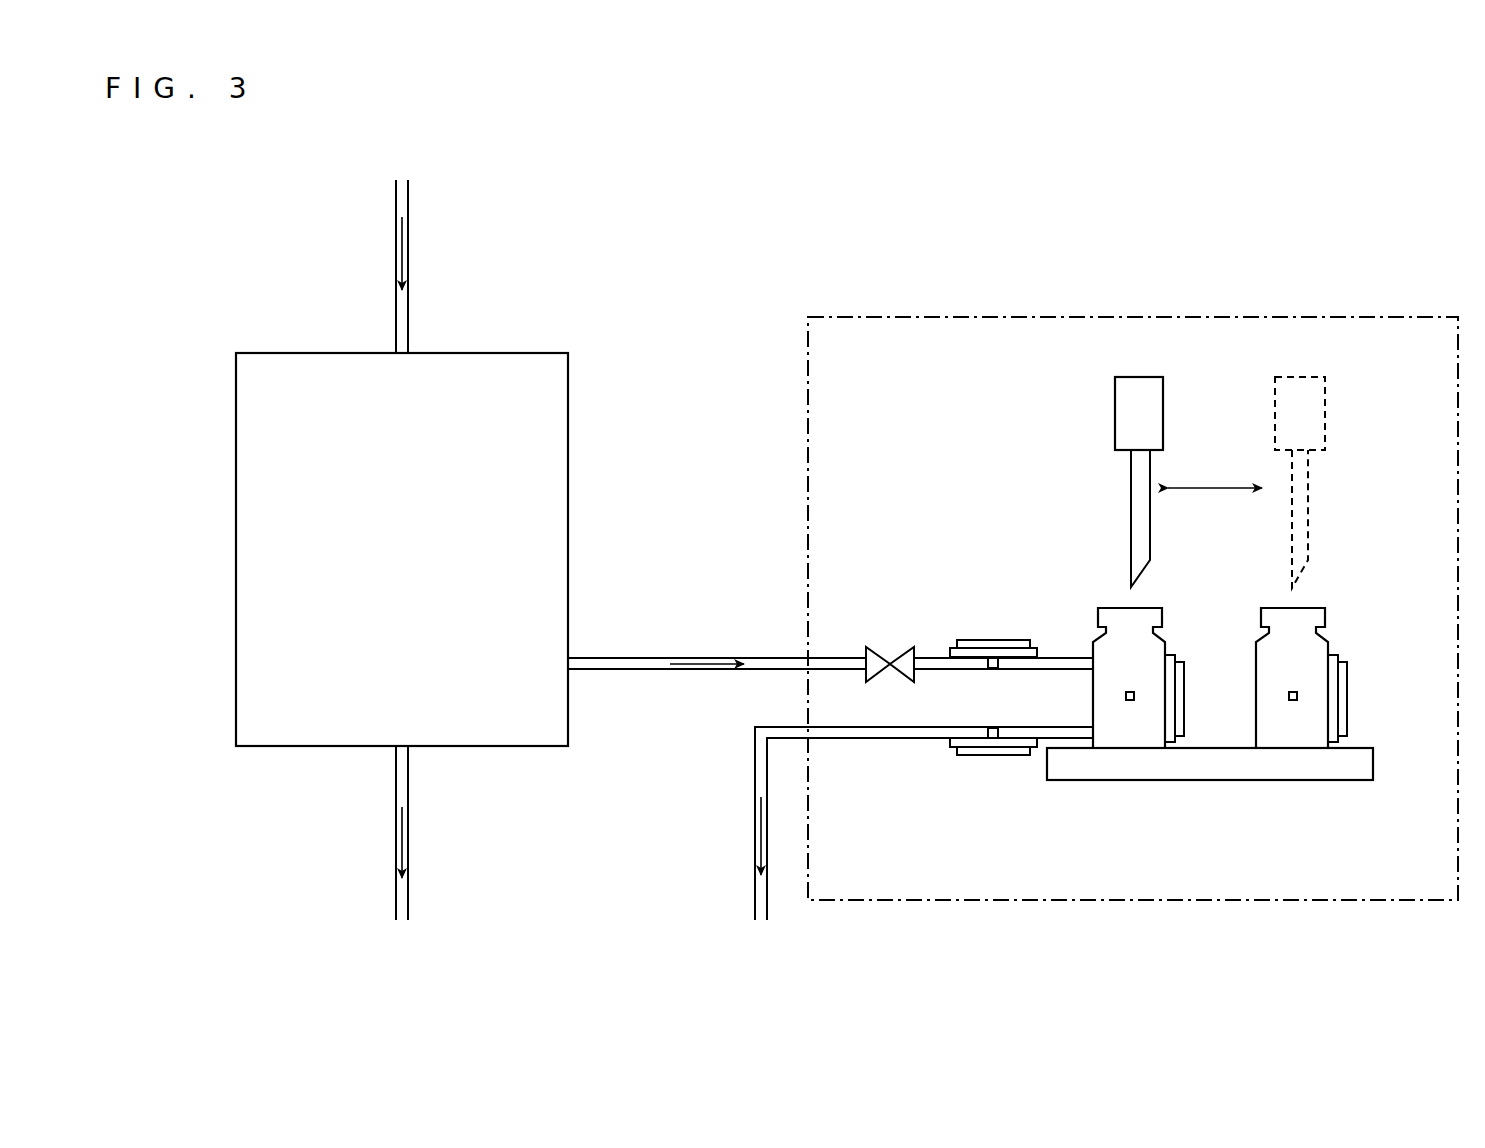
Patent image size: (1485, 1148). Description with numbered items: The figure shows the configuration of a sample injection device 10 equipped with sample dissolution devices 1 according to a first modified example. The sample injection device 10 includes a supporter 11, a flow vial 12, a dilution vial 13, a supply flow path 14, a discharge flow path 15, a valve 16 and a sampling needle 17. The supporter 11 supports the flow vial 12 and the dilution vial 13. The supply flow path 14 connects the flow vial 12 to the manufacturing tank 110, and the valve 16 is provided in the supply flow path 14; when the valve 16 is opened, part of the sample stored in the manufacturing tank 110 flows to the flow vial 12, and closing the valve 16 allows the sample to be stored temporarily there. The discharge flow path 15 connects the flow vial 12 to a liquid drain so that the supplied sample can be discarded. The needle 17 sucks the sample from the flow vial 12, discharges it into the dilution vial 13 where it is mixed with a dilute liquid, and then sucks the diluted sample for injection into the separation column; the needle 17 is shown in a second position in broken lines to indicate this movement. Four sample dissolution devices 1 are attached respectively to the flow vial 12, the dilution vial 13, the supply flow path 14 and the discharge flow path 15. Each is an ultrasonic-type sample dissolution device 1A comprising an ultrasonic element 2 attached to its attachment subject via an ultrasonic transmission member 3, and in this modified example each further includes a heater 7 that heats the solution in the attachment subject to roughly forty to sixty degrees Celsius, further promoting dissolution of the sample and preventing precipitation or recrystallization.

The sample dissolution device 1 is at (1180, 697).
The ultrasonic-type sample dissolution device 1A is at (1180, 697).
The ultrasonic element 2 is at (1012, 640).
The ultrasonic transmission member 3 is at (980, 650).
The heater 7 is at (1045, 572).
The sample injection device 10 is at (1125, 317).
The supporter 11 is at (1208, 782).
The flow vial 12 is at (1093, 675).
The dilution vial 13 is at (1256, 674).
The supply flow path 14 is at (839, 657).
The discharge flow path 15 is at (902, 741).
The valve 16 is at (877, 645).
The sampling needle 17 is at (1140, 377).
The manufacturing tank 110 is at (568, 551).